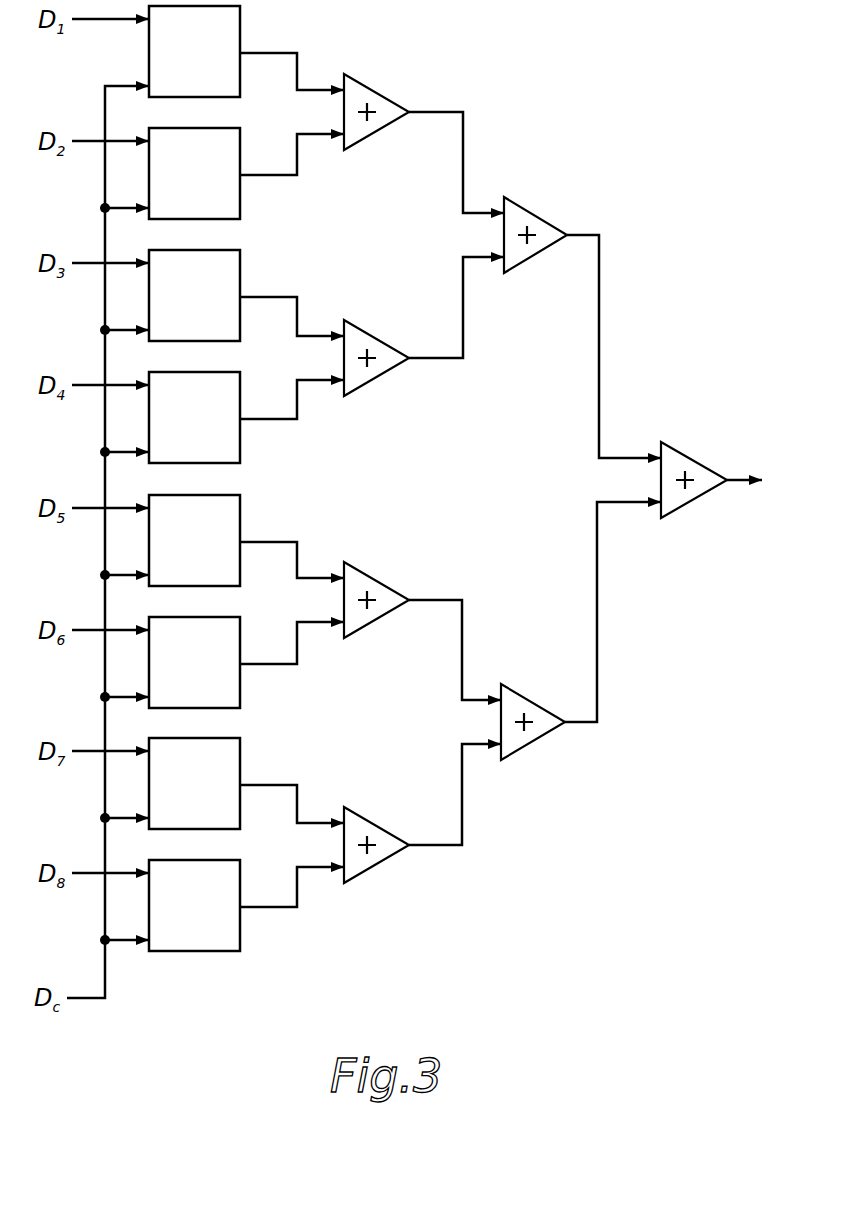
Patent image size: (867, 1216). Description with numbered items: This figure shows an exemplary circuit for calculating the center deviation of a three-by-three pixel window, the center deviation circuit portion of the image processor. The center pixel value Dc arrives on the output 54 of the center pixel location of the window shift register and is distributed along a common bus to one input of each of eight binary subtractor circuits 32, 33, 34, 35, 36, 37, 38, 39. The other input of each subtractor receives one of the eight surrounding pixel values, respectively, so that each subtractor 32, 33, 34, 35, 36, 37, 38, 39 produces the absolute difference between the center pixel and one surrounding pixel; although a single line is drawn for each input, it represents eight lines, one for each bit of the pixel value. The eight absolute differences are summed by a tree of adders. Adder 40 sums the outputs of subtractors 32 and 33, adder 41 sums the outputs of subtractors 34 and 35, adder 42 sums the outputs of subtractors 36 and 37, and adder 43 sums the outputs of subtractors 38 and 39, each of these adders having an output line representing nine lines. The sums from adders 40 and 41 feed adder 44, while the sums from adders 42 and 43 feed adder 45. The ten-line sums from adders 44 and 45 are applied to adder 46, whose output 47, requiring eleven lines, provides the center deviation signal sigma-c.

The binary subtractor circuit 32 is at (229, 97).
The binary subtractor circuit 33 is at (229, 219).
The binary subtractor circuit 34 is at (229, 341).
The binary subtractor circuit 35 is at (229, 463).
The binary subtractor circuit 36 is at (229, 586).
The binary subtractor circuit 37 is at (229, 708).
The binary subtractor circuit 38 is at (229, 829).
The binary subtractor circuit 39 is at (229, 951).
The adder 40 is at (381, 128).
The adder 41 is at (381, 374).
The adder 42 is at (381, 616).
The adder 43 is at (381, 861).
The adder 44 is at (541, 251).
The adder 45 is at (538, 738).
The adder 46 is at (689, 497).
The output 47 is at (732, 478).
The output 54 is at (86, 999).